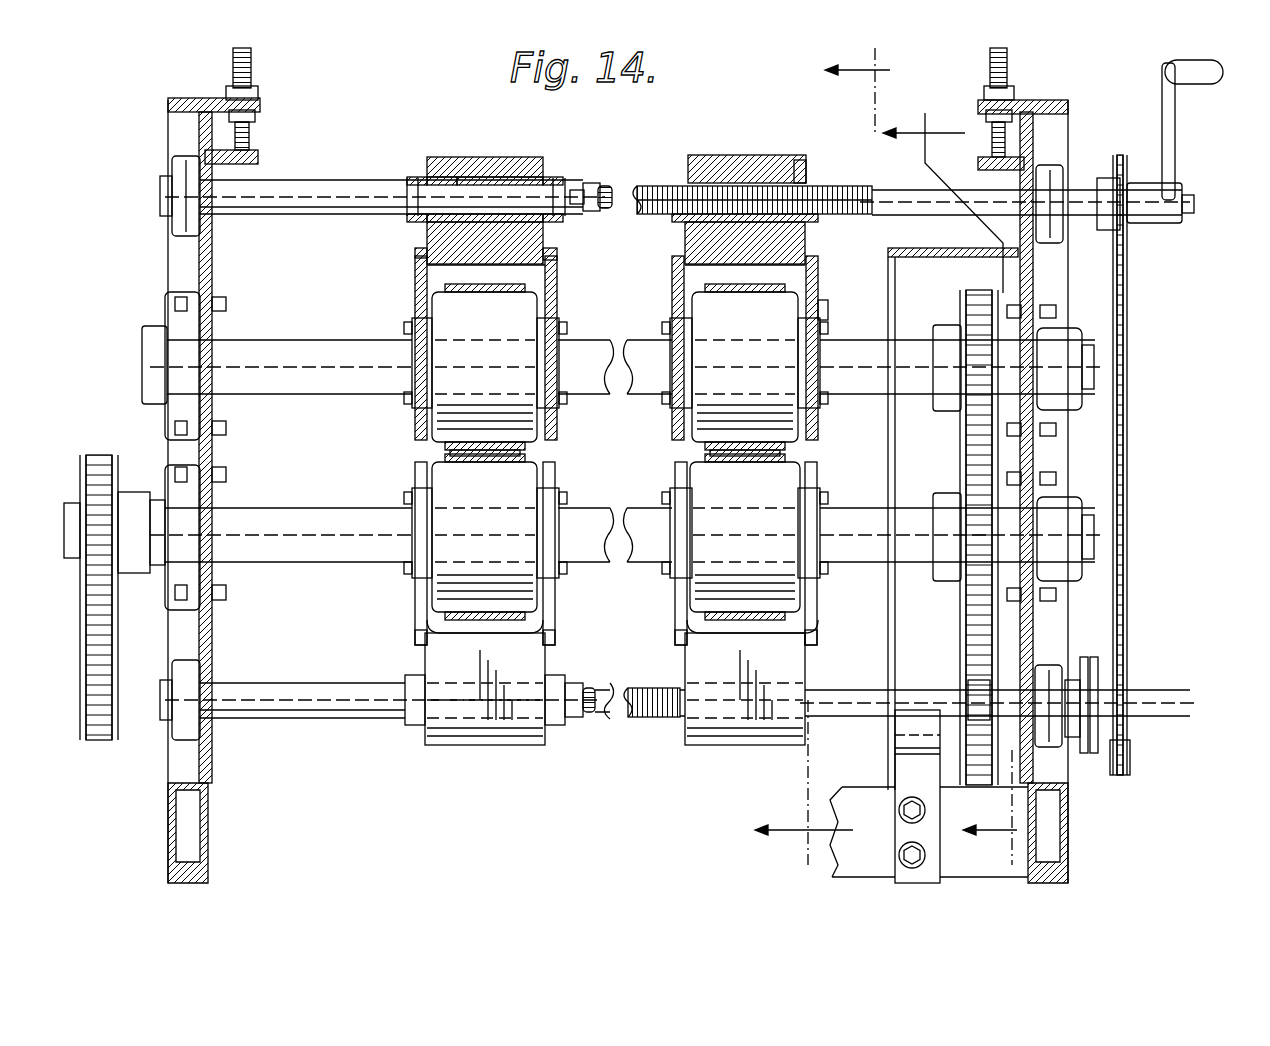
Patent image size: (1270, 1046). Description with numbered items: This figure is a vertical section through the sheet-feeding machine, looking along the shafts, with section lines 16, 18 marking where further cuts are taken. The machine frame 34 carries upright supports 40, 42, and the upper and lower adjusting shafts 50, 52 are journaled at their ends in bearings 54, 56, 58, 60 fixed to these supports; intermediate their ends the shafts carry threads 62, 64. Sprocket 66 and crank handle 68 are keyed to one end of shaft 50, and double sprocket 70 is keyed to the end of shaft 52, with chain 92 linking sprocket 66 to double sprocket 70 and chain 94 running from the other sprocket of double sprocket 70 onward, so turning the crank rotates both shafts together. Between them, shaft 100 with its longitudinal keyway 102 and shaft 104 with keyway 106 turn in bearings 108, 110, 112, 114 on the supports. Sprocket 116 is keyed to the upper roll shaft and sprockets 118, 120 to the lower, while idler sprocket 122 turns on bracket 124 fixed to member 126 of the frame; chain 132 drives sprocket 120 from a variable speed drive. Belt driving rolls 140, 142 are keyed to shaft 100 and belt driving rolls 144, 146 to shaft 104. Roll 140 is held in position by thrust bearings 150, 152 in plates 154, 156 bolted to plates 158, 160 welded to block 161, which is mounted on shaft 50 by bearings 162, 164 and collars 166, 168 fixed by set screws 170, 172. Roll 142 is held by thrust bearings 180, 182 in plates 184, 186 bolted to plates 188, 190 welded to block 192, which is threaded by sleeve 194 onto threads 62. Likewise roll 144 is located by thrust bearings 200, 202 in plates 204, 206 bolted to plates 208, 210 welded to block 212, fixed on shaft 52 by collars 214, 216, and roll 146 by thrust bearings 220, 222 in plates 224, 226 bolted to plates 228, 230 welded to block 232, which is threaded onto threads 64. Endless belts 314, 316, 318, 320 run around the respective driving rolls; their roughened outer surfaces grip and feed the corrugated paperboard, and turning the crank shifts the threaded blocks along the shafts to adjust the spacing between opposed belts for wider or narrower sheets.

The section line 16 is at (833, 457).
The section line 18 is at (950, 487).
The machine frame 34 is at (152, 837).
The support 40 is at (188, 98).
The support 42 is at (1040, 100).
The shaft 50 is at (242, 200).
The shaft 52 is at (278, 705).
The bearing 54 is at (178, 152).
The bearing 56 is at (1048, 163).
The bearing 58 is at (178, 738).
The bearing 60 is at (1052, 668).
The threads 62 is at (645, 186).
The threads 64 is at (590, 716).
The sprocket 66 is at (1120, 160).
The crank handle 68 is at (1220, 75).
The double sprocket 70 is at (1098, 684).
The chain 92 is at (1128, 535).
The chain 94 is at (1112, 757).
The shaft 100 is at (600, 372).
The keyway 102 is at (305, 345).
The shaft 104 is at (586, 522).
The keyway 106 is at (283, 562).
The bearing 108 is at (168, 298).
The bearing 110 is at (1060, 360).
The bearing 112 is at (165, 470).
The bearing 114 is at (1060, 498).
The sprocket 116 is at (962, 312).
The sprocket 118 is at (945, 497).
The sprocket 120 is at (100, 458).
The idler sprocket 122 is at (972, 698).
The bracket 124 is at (897, 728).
The member 126 is at (832, 872).
The chain 132 is at (83, 650).
The belt driving roll 140 is at (512, 306).
The belt driving roll 142 is at (772, 306).
The belt driving roll 144 is at (512, 478).
The belt driving roll 146 is at (767, 478).
The thrust bearing 150 is at (412, 340).
The thrust bearing 152 is at (557, 352).
The plate 154 is at (416, 300).
The plate 156 is at (556, 315).
The plate 158 is at (427, 250).
The plate 160 is at (557, 258).
The block 161 is at (478, 157).
The bearing 162 is at (430, 177).
The bearing 164 is at (530, 177).
The collar 166 is at (430, 177).
The collar 168 is at (558, 177).
The set screw 170 is at (406, 188).
The set screw 172 is at (578, 188).
The thrust bearing 180 is at (672, 340).
The thrust bearing 182 is at (817, 352).
The plate 184 is at (673, 295).
The plate 186 is at (824, 310).
The plate 188 is at (673, 260).
The plate 190 is at (816, 262).
The block 192 is at (778, 155).
The sleeve 194 is at (800, 155).
The thrust bearing 200 is at (415, 604).
The thrust bearing 202 is at (555, 608).
The plate 204 is at (412, 480).
The plate 206 is at (559, 470).
The plate 208 is at (416, 640).
The plate 210 is at (555, 640).
The block 212 is at (495, 745).
The collar 214 is at (412, 728).
The collar 216 is at (556, 745).
The thrust bearing 220 is at (675, 583).
The thrust bearing 222 is at (818, 495).
The plate 224 is at (670, 492).
The plate 226 is at (821, 470).
The plate 228 is at (676, 634).
The plate 230 is at (817, 640).
The block 232 is at (705, 746).
The endless belt 314 is at (422, 256).
The endless belt 316 is at (778, 284).
The endless belt 318 is at (450, 614).
The endless belt 320 is at (768, 613).